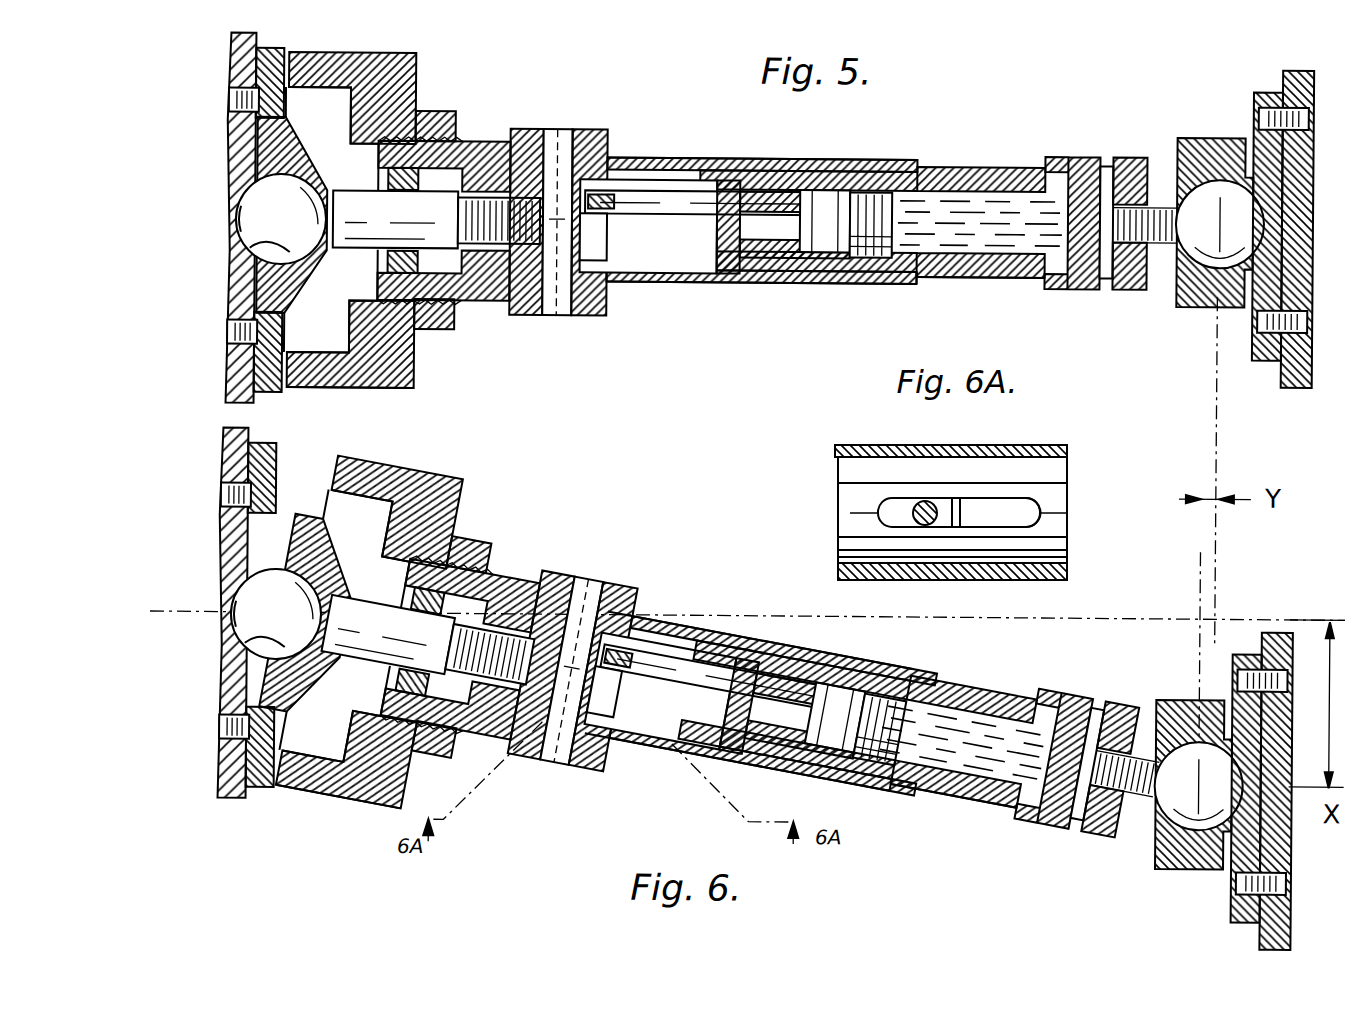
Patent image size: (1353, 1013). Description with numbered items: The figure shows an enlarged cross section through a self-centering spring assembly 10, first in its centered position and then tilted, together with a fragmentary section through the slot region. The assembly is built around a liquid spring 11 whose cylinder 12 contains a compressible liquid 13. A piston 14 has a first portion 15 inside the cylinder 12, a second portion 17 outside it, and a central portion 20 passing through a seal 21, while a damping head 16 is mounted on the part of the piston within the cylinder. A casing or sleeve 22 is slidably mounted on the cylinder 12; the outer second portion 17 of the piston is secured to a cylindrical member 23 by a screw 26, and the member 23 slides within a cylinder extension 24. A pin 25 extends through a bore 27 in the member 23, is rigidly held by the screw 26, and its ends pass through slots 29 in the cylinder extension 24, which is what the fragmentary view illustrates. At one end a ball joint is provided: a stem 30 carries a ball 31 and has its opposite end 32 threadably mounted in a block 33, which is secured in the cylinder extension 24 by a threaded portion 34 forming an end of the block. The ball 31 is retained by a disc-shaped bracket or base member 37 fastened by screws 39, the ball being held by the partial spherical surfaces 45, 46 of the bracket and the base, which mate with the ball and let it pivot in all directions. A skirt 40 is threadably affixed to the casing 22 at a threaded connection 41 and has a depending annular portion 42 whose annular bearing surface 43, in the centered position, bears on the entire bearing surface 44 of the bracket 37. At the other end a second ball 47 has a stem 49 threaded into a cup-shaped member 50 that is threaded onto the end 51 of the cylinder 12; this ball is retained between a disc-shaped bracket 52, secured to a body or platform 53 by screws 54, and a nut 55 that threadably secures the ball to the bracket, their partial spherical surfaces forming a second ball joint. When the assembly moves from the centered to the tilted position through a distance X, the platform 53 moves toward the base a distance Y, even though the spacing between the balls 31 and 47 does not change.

In FIG. 5, the self-centering spring assembly 10 is at (975, 140).
In FIG. 6, the self-centering spring assembly 10 is at (950, 808).
In FIG. 5, the liquid spring 11 is at (1005, 288).
In FIG. 5, the cylinder 12 is at (990, 167).
In FIG. 6, the cylinder 12 is at (1010, 700).
In FIG. 5, the compressible liquid 13 is at (950, 255).
In FIG. 6, the compressible liquid 13 is at (960, 800).
In FIG. 5, the piston 14 is at (718, 275).
In FIG. 6, the piston 14 is at (650, 740).
In FIG. 5, the first portion 15 is at (825, 185).
In FIG. 6, the first portion 15 is at (850, 685).
In FIG. 5, the damping head 16 is at (870, 188).
In FIG. 6, the damping head 16 is at (900, 700).
In FIG. 5, the second portion 17 is at (672, 280).
In FIG. 6A, the second portion 17 is at (1030, 500).
In FIG. 6, the second portion 17 is at (700, 660).
In FIG. 5, the central portion 20 is at (770, 285).
In FIG. 6, the central portion 20 is at (720, 760).
In FIG. 5, the seal 21 is at (790, 170).
In FIG. 6, the seal 21 is at (800, 660).
In FIG. 5, the casing or sleeve 22 is at (905, 290).
In FIG. 6, the casing or sleeve 22 is at (880, 800).
In FIG. 5, the cylindrical member 23 is at (717, 197).
In FIG. 6A, the cylindrical member 23 is at (845, 515).
In FIG. 6, the cylindrical member 23 is at (655, 620).
In FIG. 5, the cylinder extension 24 is at (535, 313).
In FIG. 6A, the cylinder extension 24 is at (897, 445).
In FIG. 6, the cylinder extension 24 is at (555, 560).
In FIG. 5, the pin 25 is at (558, 127).
In FIG. 6A, the pin 25 is at (840, 482).
In FIG. 6, the pin 25 is at (600, 580).
In FIG. 5, the screw 26 is at (568, 313).
In FIG. 6, the screw 26 is at (545, 725).
In FIG. 5, the bore 27 is at (600, 248).
In FIG. 6, the bore 27 is at (615, 705).
In FIG. 5, the slots 29 is at (665, 158).
In FIG. 6A, the slots 29 is at (985, 505).
In FIG. 6, the slots 29 is at (690, 630).
In FIG. 5, the stem 30 is at (343, 187).
In FIG. 6, the stem 30 is at (355, 590).
In FIG. 5, the ball 31 is at (268, 205).
In FIG. 6, the ball 31 is at (262, 600).
In FIG. 5, the opposite end 32 is at (472, 242).
In FIG. 6, the opposite end 32 is at (463, 647).
In FIG. 5, the block 33 is at (470, 140).
In FIG. 6, the block 33 is at (500, 570).
In FIG. 5, the threaded portion 34 is at (395, 219).
In FIG. 6, the threaded portion 34 is at (355, 678).
In FIG. 5, the bracket or base member 37 is at (255, 372).
In FIG. 6, the bracket or base member 37 is at (245, 765).
In FIG. 5, the screws 39 is at (228, 100).
In FIG. 6, the screws 39 is at (220, 495).
In FIG. 5, the skirt 40 is at (395, 390).
In FIG. 6, the skirt 40 is at (330, 815).
In FIG. 5, the threaded connection 41 is at (432, 112).
In FIG. 6, the threaded connection 41 is at (470, 540).
In FIG. 5, the depending annular portion 42 is at (360, 390).
In FIG. 6, the depending annular portion 42 is at (300, 800).
In FIG. 5, the annular bearing surface 43 is at (297, 352).
In FIG. 6, the annular bearing surface 43 is at (330, 480).
In FIG. 5, the bearing surface 44 is at (263, 372).
In FIG. 6, the bearing surface 44 is at (283, 525).
In FIG. 5, the partial spherical surface 45 is at (255, 254).
In FIG. 6, the partial spherical surface 45 is at (255, 645).
In FIG. 5, the partial spherical surface 46 is at (247, 222).
In FIG. 6, the partial spherical surface 46 is at (240, 612).
In FIG. 5, the second ball 47 is at (1215, 265).
In FIG. 6, the second ball 47 is at (1180, 825).
In FIG. 5, the stem 49 is at (1108, 165).
In FIG. 6, the stem 49 is at (1110, 810).
In FIG. 5, the cup-shaped member 50 is at (1125, 283).
In FIG. 6, the cup-shaped member 50 is at (1100, 840).
In FIG. 5, the end 51 is at (1060, 153).
In FIG. 6, the end 51 is at (1095, 710).
In FIG. 5, the bracket 52 is at (1265, 360).
In FIG. 6, the bracket 52 is at (1275, 840).
In FIG. 5, the body or platform 53 is at (1300, 385).
In FIG. 6, the body or platform 53 is at (1285, 650).
In FIG. 5, the screws 54 is at (1262, 108).
In FIG. 6, the screws 54 is at (1250, 680).
In FIG. 5, the nut 55 is at (1195, 135).
In FIG. 6, the nut 55 is at (1175, 702).